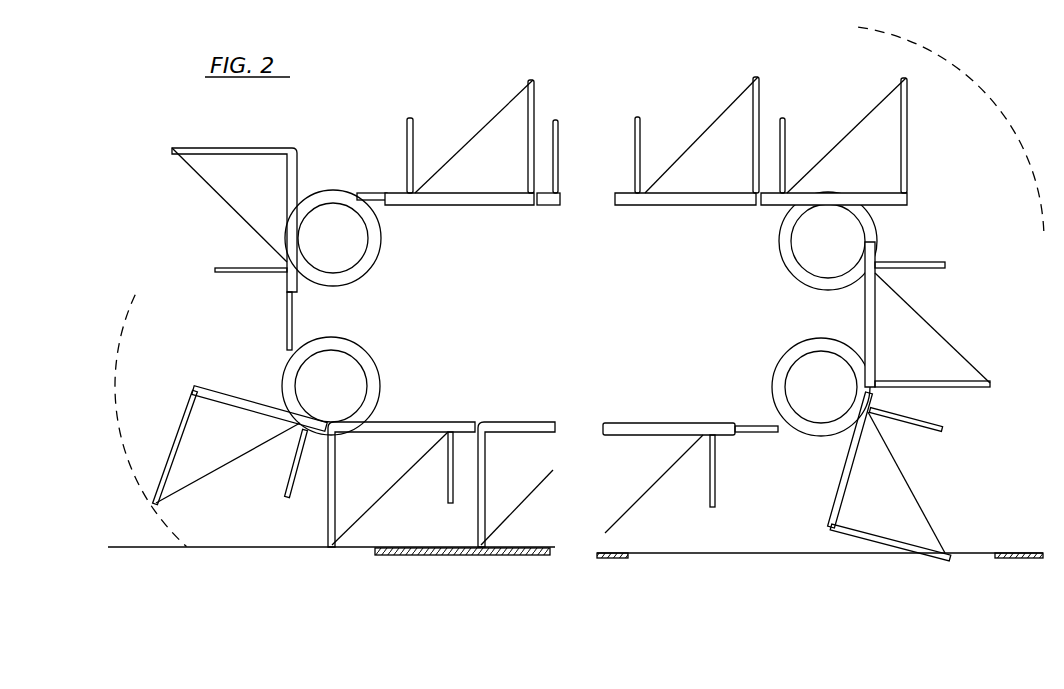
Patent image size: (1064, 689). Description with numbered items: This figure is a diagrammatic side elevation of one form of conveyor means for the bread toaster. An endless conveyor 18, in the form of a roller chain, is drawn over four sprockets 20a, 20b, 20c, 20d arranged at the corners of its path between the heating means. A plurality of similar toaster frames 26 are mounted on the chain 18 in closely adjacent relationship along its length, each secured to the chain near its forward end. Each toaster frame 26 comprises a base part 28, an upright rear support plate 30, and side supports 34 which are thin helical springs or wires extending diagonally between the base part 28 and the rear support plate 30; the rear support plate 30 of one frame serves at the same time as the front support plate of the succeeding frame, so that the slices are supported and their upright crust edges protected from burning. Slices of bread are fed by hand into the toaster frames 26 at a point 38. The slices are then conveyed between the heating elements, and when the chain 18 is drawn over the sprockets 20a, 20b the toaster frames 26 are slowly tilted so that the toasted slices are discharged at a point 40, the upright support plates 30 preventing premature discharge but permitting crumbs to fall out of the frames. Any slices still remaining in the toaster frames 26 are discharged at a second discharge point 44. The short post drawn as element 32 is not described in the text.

The endless conveyor 18 is at (296, 320).
The sprocket 20a is at (372, 267).
The sprocket 20b is at (380, 390).
The sprocket 20c is at (789, 266).
The sprocket 20d is at (780, 382).
The toaster frame 26 is at (661, 126).
The base part 28 is at (425, 202).
The upright rear support plate 30 is at (528, 165).
The short post 32 is at (407, 147).
The side support 34 is at (487, 122).
The feeding point 38 is at (983, 132).
The discharge point 40 is at (218, 527).
The second discharge point 44 is at (773, 530).